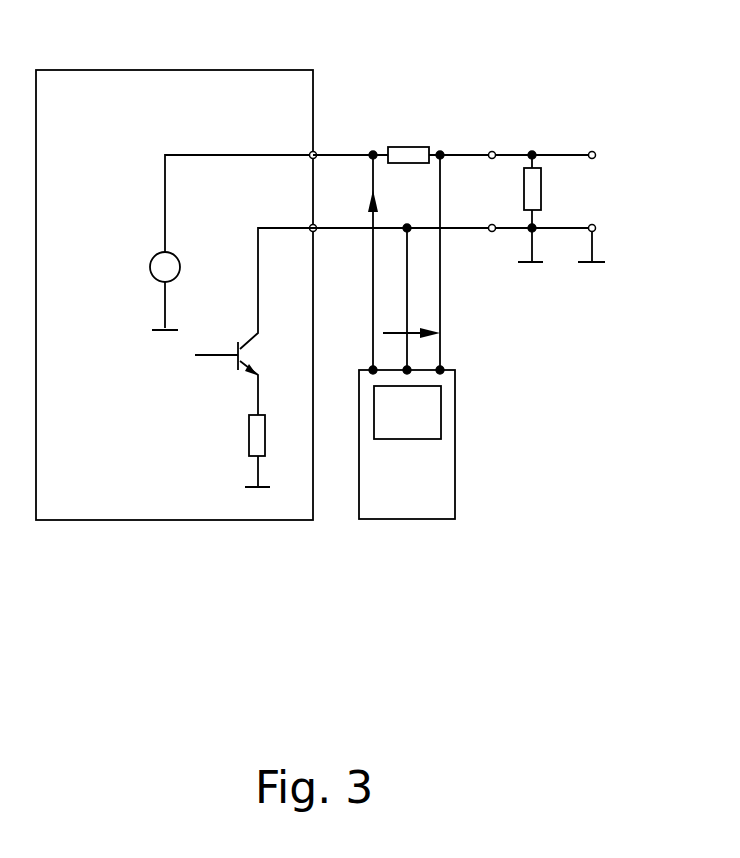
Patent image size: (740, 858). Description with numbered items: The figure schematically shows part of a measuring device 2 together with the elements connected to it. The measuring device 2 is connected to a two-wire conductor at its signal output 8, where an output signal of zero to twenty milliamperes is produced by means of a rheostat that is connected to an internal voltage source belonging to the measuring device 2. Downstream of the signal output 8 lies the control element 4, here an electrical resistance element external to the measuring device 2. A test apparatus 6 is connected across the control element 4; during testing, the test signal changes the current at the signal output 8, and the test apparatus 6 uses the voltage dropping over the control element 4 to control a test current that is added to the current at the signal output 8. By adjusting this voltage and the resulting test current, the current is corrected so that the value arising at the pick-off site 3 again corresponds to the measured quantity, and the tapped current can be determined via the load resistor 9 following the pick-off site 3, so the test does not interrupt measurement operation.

The measuring device 2 is at (180, 524).
The pick-off site 3 is at (490, 180).
The control element 4 is at (412, 147).
The test apparatus 6 is at (402, 524).
The signal output 8 is at (325, 191).
The load resistor 9 is at (541, 192).